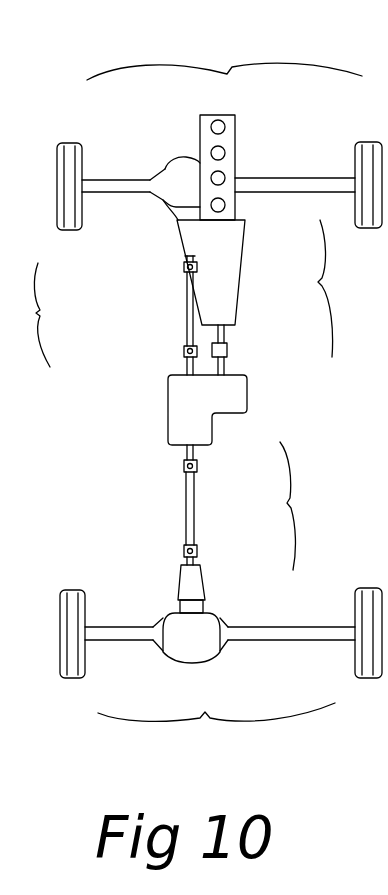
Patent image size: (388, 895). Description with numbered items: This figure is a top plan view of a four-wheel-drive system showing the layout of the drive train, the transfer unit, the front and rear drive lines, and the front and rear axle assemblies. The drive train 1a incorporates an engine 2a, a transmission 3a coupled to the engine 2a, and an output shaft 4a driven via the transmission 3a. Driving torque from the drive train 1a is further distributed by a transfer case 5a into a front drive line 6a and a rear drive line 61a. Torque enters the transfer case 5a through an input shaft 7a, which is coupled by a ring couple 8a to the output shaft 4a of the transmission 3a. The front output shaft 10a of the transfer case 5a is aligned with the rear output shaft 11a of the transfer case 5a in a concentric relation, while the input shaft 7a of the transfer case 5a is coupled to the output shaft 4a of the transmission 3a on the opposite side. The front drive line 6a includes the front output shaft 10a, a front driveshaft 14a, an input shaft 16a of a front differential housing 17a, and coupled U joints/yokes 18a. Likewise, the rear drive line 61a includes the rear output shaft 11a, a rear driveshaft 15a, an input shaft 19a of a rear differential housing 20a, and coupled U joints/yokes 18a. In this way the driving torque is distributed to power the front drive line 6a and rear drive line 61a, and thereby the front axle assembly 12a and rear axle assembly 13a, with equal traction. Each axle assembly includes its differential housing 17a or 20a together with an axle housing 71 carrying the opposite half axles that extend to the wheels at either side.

The drive train 1a is at (338, 288).
The engine 2a is at (238, 140).
The transmission 3a is at (238, 272).
The output shaft 4a is at (221, 333).
The transfer case 5a is at (249, 397).
The front drive line 6a is at (25, 315).
The input shaft 7a is at (222, 364).
The ring couple 8a is at (221, 350).
The front output shaft 10a is at (189, 364).
The rear output shaft 11a is at (187, 449).
The front axle assembly 12a is at (224, 50).
The rear axle assembly 13a is at (216, 736).
The front driveshaft 14a is at (190, 317).
The rear driveshaft 15a is at (190, 510).
The input shaft 16a is at (188, 259).
The front differential housing 17a is at (188, 172).
The U joint/yoke 18a is at (185, 270).
The input shaft 19a is at (186, 558).
The rear differential housing 20a is at (192, 645).
The rear drive line 61a is at (311, 506).
The axle housing 71 is at (120, 187).